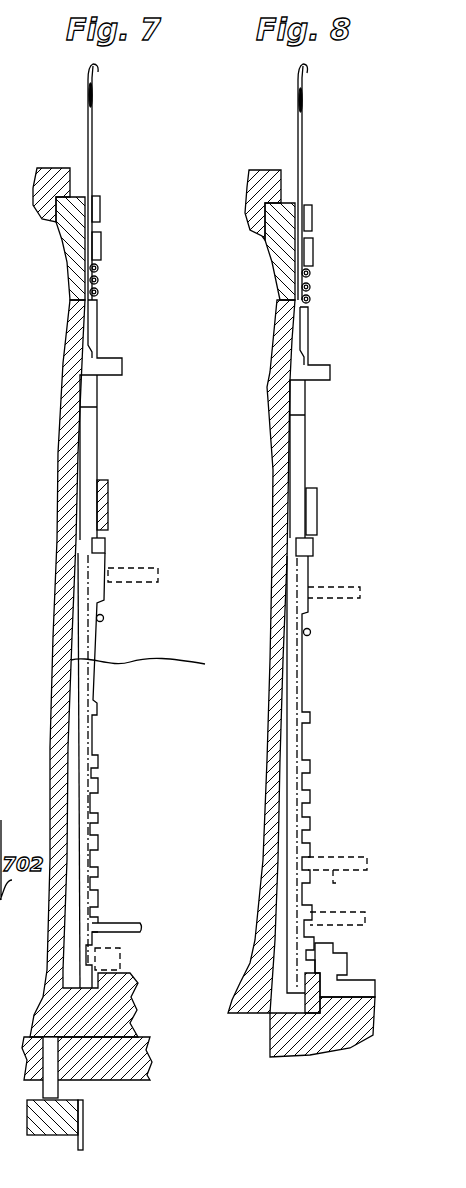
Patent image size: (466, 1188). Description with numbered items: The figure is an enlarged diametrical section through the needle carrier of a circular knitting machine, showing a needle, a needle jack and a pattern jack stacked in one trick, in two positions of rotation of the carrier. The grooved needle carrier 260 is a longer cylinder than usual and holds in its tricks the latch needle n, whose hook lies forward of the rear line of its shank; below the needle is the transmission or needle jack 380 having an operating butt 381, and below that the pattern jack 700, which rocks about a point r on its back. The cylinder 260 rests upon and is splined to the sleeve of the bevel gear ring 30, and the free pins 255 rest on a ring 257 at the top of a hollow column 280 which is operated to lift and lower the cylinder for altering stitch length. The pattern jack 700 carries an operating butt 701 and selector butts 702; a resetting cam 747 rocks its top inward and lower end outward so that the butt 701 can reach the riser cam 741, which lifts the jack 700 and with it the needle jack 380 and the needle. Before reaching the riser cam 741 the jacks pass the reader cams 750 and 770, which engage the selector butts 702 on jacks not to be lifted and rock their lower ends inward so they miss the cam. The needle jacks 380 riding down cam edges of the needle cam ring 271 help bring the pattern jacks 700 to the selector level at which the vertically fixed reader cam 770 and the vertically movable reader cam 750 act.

In FIG. 7, the needle n is at (96, 136).
In FIG. 8, the needle n is at (303, 162).
In FIG. 7, the rocking point r is at (149, 666).
In FIG. 8, the rocking point r is at (272, 659).
In FIG. 7, the needle carrier 260 is at (57, 782).
In FIG. 8, the needle carrier 260 is at (273, 734).
In FIG. 7, the needle jack 380 is at (89, 446).
In FIG. 8, the needle jack 380 is at (304, 443).
In FIG. 7, the needle cam ring 271 is at (110, 502).
In FIG. 7, the operating butt 381 is at (106, 546).
In FIG. 8, the operating butt 381 is at (316, 549).
In FIG. 7, the resetting cam 747 is at (157, 563).
In FIG. 8, the resetting cam 747 is at (362, 600).
In FIG. 7, the pattern jack 700 is at (96, 733).
In FIG. 8, the pattern jack 700 is at (310, 740).
In FIG. 7, the selector butt 702 is at (96, 870).
In FIG. 8, the selector butt 702 is at (308, 856).
In FIG. 7, the reader cam 770 is at (140, 928).
In FIG. 7, the bevel gear ring 30 is at (152, 1070).
In FIG. 7, the free pin 255 is at (58, 1090).
In FIG. 7, the hollow column 280 is at (85, 1126).
In FIG. 7, the ring 257 is at (50, 1136).
In FIG. 8, the reader cam 750 is at (340, 912).
In FIG. 8, the operating butt 701 is at (310, 958).
In FIG. 8, the riser cam 741 is at (273, 1016).